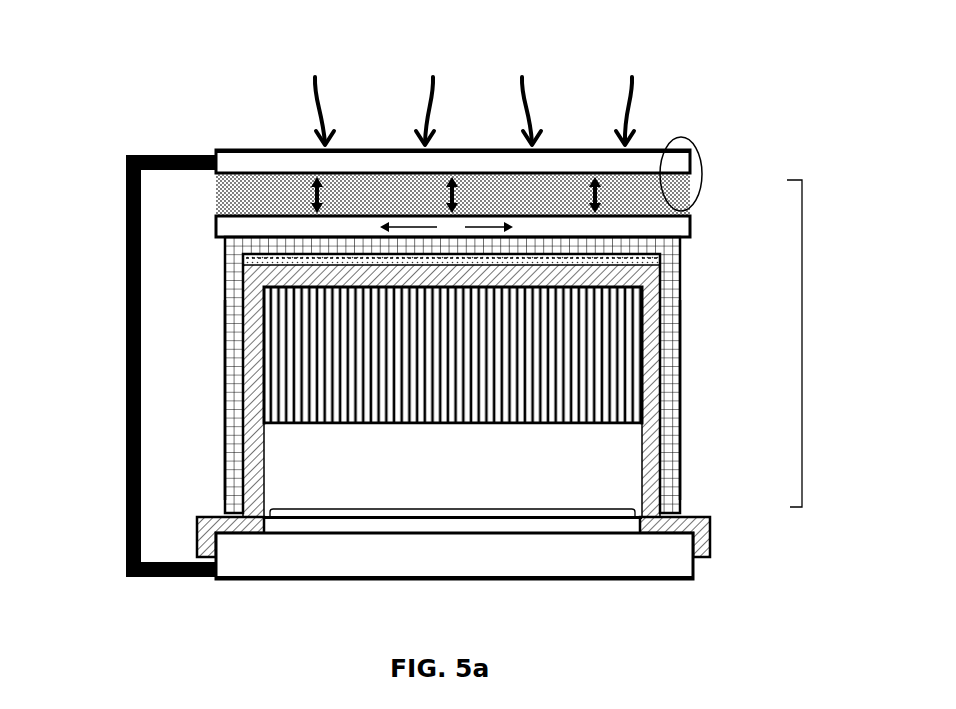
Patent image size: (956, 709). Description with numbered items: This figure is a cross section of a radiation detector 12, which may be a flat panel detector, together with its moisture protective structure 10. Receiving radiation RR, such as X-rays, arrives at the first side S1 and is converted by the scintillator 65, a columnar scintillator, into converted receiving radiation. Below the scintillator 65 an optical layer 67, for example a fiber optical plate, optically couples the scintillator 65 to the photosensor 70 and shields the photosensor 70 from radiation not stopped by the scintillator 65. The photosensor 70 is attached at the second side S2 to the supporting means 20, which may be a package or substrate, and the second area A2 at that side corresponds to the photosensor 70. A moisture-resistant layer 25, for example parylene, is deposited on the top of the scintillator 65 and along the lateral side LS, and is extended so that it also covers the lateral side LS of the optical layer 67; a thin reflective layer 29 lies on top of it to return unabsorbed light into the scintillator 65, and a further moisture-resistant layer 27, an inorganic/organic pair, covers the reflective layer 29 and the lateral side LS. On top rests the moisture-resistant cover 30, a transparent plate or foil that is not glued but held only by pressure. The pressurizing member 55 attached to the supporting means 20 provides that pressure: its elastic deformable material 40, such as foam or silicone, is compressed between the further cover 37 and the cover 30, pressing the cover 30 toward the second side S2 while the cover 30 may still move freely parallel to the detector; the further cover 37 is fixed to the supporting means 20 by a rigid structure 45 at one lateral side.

The radiation detector 12 is at (127, 80).
The moisture protective structure 10 is at (802, 343).
The supporting means 20 is at (595, 565).
The moisture-resistant layer 25 is at (648, 358).
The further moisture-resistant layer 27 is at (670, 302).
The reflective layer 29 is at (645, 263).
The moisture-resistant cover 30 is at (673, 227).
The further cover 37 is at (682, 162).
The elastic deformable material 40 is at (220, 195).
The rigid structure 45 is at (125, 420).
The pressurizing member 55 is at (703, 182).
The scintillator 65 is at (280, 325).
The optical layer 67 is at (278, 463).
The photosensor 70 is at (628, 526).
The first side S1 is at (230, 123).
The second side S2 is at (270, 595).
The lateral side LS is at (213, 388).
The receiving radiation RR is at (623, 70).
The second area A2 is at (460, 509).